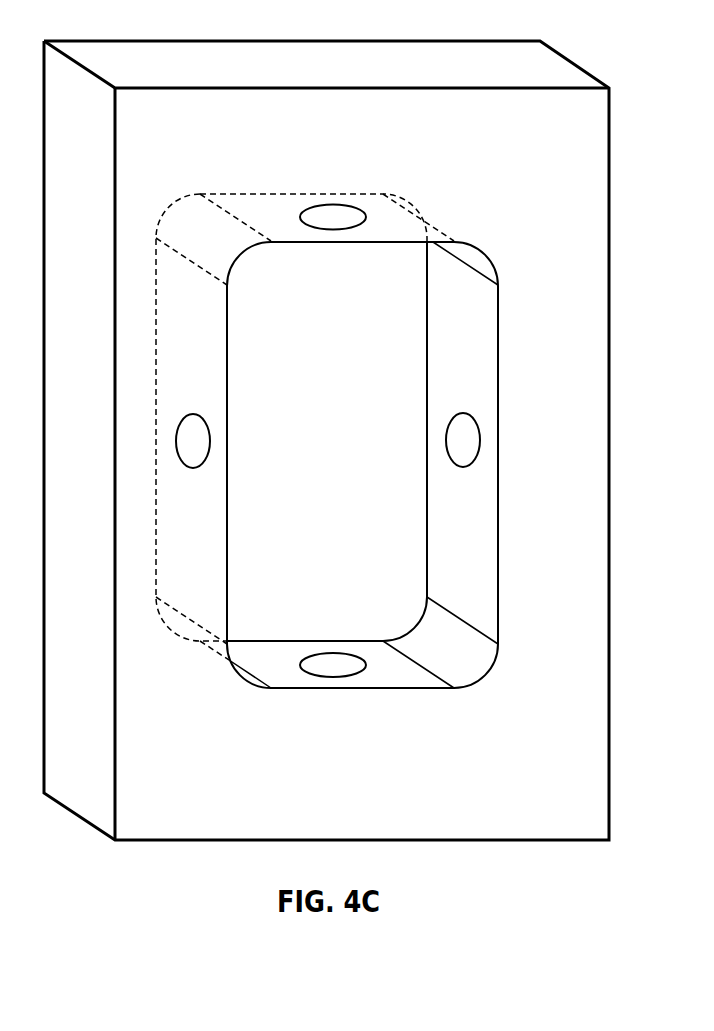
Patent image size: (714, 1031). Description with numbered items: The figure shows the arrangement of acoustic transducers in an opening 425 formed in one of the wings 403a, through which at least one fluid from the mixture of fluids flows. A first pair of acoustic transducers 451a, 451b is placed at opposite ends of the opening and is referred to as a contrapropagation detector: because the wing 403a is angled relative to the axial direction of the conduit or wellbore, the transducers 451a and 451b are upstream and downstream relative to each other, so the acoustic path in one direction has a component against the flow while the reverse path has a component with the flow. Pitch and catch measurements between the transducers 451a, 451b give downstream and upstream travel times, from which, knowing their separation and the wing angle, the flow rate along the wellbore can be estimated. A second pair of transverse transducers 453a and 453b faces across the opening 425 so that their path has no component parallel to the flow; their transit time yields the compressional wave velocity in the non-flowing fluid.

The wing 403a is at (130, 40).
The opening 425 is at (263, 287).
The acoustic transducer 451a is at (333, 218).
The acoustic transducer 451b is at (333, 665).
The transverse transducer 453a is at (463, 440).
The transverse transducer 453b is at (192, 440).